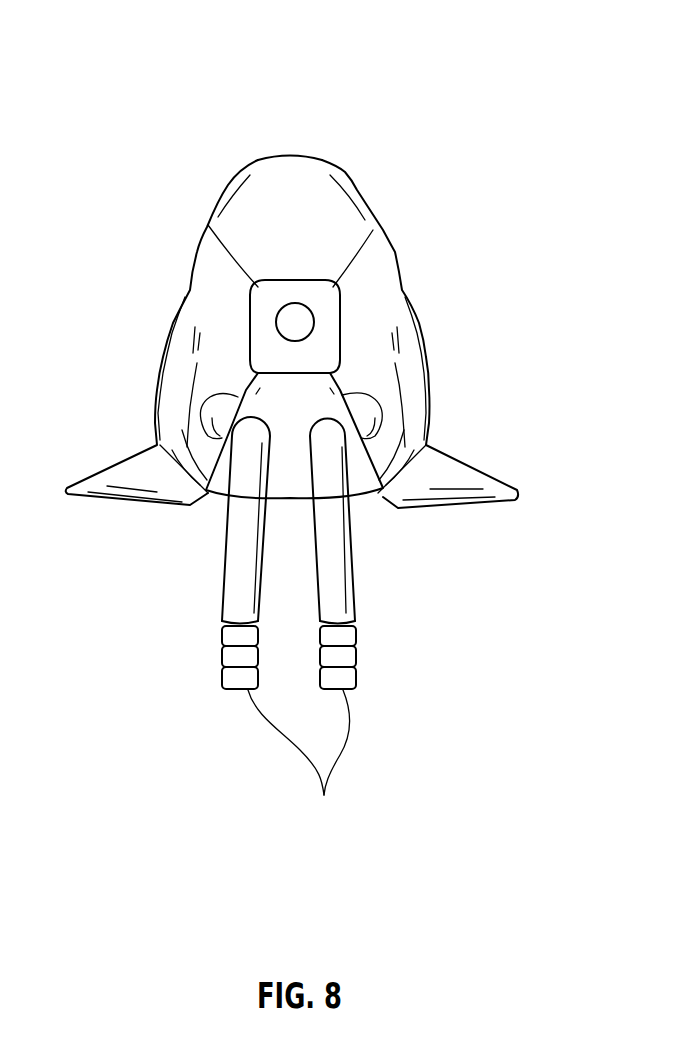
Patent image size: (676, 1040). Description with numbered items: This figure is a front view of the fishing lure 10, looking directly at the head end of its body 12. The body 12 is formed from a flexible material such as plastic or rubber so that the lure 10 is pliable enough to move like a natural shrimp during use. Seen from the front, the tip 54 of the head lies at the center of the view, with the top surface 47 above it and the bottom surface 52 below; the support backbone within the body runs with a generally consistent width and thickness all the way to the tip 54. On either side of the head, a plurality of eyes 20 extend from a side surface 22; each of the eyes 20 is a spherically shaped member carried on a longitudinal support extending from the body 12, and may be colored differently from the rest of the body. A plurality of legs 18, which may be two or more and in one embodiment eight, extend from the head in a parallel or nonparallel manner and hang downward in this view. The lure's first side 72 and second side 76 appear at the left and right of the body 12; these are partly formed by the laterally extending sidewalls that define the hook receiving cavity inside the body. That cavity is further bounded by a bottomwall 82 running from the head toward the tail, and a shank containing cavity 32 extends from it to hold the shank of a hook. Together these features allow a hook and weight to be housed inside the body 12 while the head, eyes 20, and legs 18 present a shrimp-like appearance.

The fishing lure 10 is at (185, 746).
The body 12 is at (330, 173).
The legs 18 is at (324, 792).
The eyes 20 is at (207, 410).
The side surface 22 is at (316, 219).
The shank containing cavity 32 is at (282, 312).
The top surface 47 is at (295, 157).
The bottom surface 52 is at (300, 447).
The tip of the head 54 is at (360, 305).
The first side 72 is at (397, 327).
The second side 76 is at (185, 298).
The bottomwall 82 is at (278, 470).